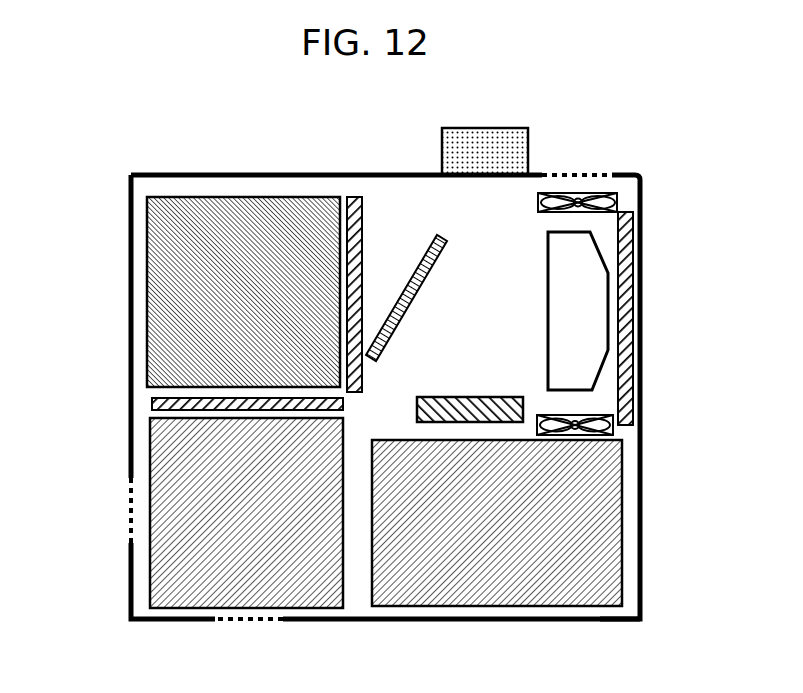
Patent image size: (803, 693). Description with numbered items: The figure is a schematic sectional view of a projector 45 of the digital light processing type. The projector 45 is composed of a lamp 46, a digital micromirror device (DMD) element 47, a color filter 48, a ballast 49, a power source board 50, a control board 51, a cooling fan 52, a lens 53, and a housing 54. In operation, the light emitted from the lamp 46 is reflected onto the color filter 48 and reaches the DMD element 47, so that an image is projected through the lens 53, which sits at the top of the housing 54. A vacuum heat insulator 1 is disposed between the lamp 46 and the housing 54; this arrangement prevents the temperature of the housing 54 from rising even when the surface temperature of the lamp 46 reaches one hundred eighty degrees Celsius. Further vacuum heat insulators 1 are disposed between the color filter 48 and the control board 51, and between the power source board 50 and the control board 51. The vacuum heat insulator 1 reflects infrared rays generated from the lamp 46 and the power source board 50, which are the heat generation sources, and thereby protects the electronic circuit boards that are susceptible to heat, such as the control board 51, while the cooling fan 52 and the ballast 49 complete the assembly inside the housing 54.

The projector 45 is at (288, 148).
The lamp 46 is at (580, 257).
The DMD element 47 is at (523, 395).
The color filter 48 is at (428, 248).
The ballast 49 is at (603, 502).
The power source board 50 is at (165, 583).
The control board 51 is at (160, 298).
The cooling fan 52 is at (612, 193).
The lens 53 is at (473, 130).
The housing 54 is at (623, 622).
The vacuum heat insulator 1 is at (357, 292).